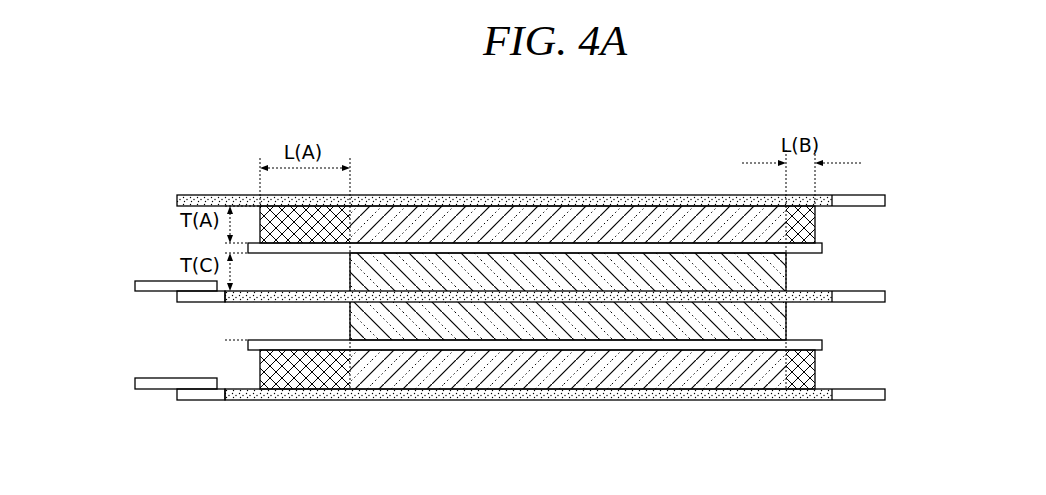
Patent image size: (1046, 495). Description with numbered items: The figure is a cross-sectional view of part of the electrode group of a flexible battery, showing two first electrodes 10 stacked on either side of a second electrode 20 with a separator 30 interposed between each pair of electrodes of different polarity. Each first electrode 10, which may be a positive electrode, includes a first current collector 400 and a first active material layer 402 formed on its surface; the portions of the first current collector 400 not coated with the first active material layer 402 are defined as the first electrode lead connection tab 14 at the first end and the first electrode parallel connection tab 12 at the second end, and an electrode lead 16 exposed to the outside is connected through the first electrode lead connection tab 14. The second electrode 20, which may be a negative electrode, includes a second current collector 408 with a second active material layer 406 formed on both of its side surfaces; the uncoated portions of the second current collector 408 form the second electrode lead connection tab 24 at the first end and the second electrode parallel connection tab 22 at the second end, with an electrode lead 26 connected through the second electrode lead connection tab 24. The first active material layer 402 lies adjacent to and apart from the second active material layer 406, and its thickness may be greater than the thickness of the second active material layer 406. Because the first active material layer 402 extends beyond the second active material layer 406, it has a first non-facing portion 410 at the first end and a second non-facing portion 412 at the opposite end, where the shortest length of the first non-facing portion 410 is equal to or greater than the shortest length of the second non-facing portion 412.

The first electrode 10 is at (497, 279).
The first electrode parallel connection tab 12 is at (877, 196).
The first electrode lead connection tab 14 is at (195, 397).
The electrode lead 16 is at (135, 383).
The second electrode 20 is at (496, 297).
The second electrode parallel connection tab 22 is at (885, 296).
The second electrode lead connection tab 24 is at (195, 297).
The electrode lead 26 is at (135, 287).
The separator 30 is at (772, 248).
The first current collector 400 is at (578, 202).
The first active material layer 402 is at (678, 232).
The second active material layer 406 is at (450, 267).
The second current collector 408 is at (490, 295).
The first non-facing portion 410 is at (293, 227).
The second non-facing portion 412 is at (818, 217).